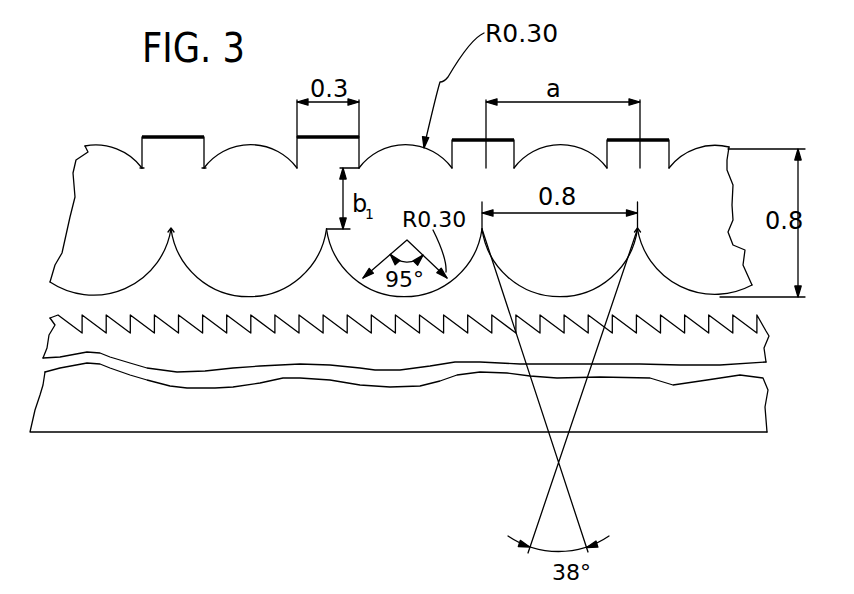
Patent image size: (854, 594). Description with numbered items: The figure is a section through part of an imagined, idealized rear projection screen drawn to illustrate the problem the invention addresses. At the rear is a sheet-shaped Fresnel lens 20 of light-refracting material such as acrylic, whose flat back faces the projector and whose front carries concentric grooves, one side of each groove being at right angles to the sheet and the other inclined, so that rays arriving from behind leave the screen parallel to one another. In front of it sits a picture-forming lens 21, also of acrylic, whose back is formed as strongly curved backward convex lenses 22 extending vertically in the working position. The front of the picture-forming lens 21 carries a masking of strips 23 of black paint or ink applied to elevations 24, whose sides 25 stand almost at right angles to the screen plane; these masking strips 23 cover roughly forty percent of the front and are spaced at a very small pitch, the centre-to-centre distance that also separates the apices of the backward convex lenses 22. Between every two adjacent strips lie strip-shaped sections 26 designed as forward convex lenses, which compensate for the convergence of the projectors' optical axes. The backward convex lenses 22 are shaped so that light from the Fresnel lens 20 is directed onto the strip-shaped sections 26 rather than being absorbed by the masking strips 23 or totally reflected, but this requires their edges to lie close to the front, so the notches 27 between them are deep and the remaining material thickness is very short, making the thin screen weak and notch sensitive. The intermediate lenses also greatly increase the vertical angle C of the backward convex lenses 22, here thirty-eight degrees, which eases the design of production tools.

The Fresnel lens 20 is at (665, 420).
The picture-forming lens 21 is at (73, 210).
The backward convex lenses 22 is at (116, 283).
The masking strips 23 is at (173, 135).
The elevations 24 is at (178, 152).
The sides 25 is at (144, 166).
The strip-shaped sections 26 is at (253, 142).
The notches 27 is at (193, 263).
The vertical angle C is at (562, 422).